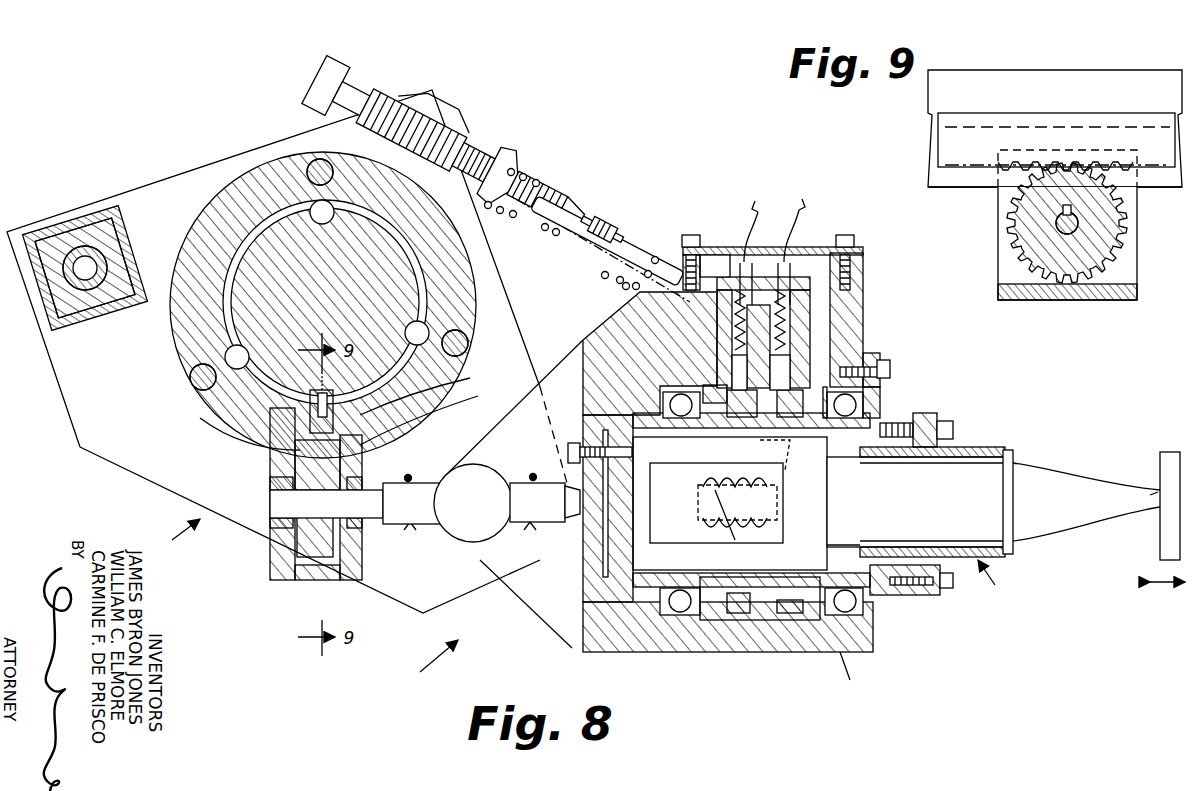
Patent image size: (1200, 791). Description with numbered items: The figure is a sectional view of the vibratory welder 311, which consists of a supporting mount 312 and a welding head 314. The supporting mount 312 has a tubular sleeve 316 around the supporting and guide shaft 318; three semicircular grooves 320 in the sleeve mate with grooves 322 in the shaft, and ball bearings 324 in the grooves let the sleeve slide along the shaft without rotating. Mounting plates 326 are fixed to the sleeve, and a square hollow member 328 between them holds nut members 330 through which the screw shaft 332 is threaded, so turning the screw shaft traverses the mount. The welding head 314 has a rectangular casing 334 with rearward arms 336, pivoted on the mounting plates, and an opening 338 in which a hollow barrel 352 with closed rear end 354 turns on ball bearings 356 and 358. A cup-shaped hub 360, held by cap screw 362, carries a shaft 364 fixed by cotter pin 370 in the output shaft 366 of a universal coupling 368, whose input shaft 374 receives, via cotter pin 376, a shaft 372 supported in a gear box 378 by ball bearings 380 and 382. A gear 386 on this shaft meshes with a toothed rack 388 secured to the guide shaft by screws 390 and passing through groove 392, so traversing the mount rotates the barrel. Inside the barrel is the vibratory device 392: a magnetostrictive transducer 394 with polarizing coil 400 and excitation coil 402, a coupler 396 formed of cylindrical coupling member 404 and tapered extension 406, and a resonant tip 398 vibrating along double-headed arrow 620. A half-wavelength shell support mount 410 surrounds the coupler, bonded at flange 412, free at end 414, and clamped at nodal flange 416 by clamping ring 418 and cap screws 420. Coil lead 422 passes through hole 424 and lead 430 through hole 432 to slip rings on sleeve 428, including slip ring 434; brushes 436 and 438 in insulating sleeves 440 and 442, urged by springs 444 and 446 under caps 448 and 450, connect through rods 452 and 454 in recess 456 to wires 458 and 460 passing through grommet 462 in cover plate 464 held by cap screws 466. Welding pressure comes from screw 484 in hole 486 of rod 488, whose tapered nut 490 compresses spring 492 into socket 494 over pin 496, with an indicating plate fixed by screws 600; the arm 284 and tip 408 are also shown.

In FIG. 8, the arcuate arm 284 is at (392, 408).
In FIG. 8, the vibratory welder 311 is at (433, 668).
In FIG. 8, the supporting mount 312 is at (140, 541).
In FIG. 8, the welding head 314 is at (828, 702).
In FIG. 8, the tubular sleeve 316 is at (248, 192).
In FIG. 9, the tubular sleeve 316 is at (945, 178).
In FIG. 8, the supporting and guide shaft 318 is at (268, 268).
In FIG. 9, the supporting and guide shaft 318 is at (1000, 82).
In FIG. 8, the grooves 320 is at (300, 170).
In FIG. 8, the grooves 322 is at (425, 225).
In FIG. 8, the ball bearings 324 is at (322, 212).
In FIG. 8, the mounting plates 326 is at (75, 397).
In FIG. 8, the hollow member 328 is at (125, 318).
In FIG. 8, the nut members 330 is at (78, 318).
In FIG. 8, the screw shaft 332 is at (80, 254).
In FIG. 8, the casing 334 is at (612, 640).
In FIG. 8, the arms 336 is at (530, 413).
In FIG. 8, the opening 338 is at (608, 405).
In FIG. 8, the barrel 352 is at (878, 412).
In FIG. 8, the closed rear end 354 is at (635, 538).
In FIG. 8, the ball bearing 356 is at (670, 618).
In FIG. 8, the ball bearing 358 is at (835, 618).
In FIG. 8, the hub 360 is at (630, 560).
In FIG. 8, the cap screw 362 is at (573, 445).
In FIG. 8, the shaft 364 is at (568, 515).
In FIG. 8, the output shaft 366 is at (520, 522).
In FIG. 8, the universal coupling 368 is at (478, 540).
In FIG. 8, the cotter pin 370 is at (533, 473).
In FIG. 8, the shaft 372 is at (372, 512).
In FIG. 9, the shaft 372 is at (1056, 223).
In FIG. 8, the input shaft 374 is at (428, 498).
In FIG. 8, the cotter pin 376 is at (412, 528).
In FIG. 8, the gear box 378 is at (280, 578).
In FIG. 9, the gear box 378 is at (1012, 270).
In FIG. 8, the ball bearing 380 is at (360, 480).
In FIG. 8, the ball bearing 382 is at (270, 482).
In FIG. 8, the gear 386 is at (320, 545).
In FIG. 9, the gear 386 is at (1080, 268).
In FIG. 8, the toothed rack 388 is at (335, 418).
In FIG. 9, the toothed rack 388 is at (950, 142).
In FIG. 8, the screws 390 is at (300, 385).
In FIG. 8, the vibratory device 392 is at (395, 426).
In FIG. 8, the magnetostrictive transducer 394 is at (658, 498).
In FIG. 8, the coupler 396 is at (1028, 470).
In FIG. 8, the resonant tip 398 is at (1170, 452).
In FIG. 8, the polarizing coil 400 is at (720, 484).
In FIG. 8, the excitation coil 402 is at (735, 530).
In FIG. 8, the cylindrical coupling member 404 is at (950, 540).
In FIG. 8, the extension 406 is at (1042, 527).
In FIG. 8, the horn tip 408 is at (1152, 513).
In FIG. 8, the support mount 410 is at (962, 447).
In FIG. 8, the flange 412 is at (1010, 450).
In FIG. 8, the end 414 is at (835, 548).
In FIG. 8, the flange 416 is at (905, 575).
In FIG. 8, the clamping ring 418 is at (922, 415).
In FIG. 8, the cap screws 420 is at (940, 418).
In FIG. 8, the other end of polarizing coil 422 is at (775, 453).
In FIG. 8, the hole 424 is at (700, 418).
In FIG. 8, the sleeve 428 is at (795, 404).
In FIG. 8, the other end of excitation coil 430 is at (785, 390).
In FIG. 8, the hole 432 is at (916, 502).
In FIG. 8, the slip ring 434 is at (858, 360).
In FIG. 8, the contact brush 436 is at (745, 367).
In FIG. 8, the contact brush 438 is at (805, 330).
In FIG. 8, the insulating sleeve 440 is at (722, 330).
In FIG. 8, the insulating sleeve 442 is at (790, 300).
In FIG. 8, the helical coil spring 444 is at (717, 325).
In FIG. 8, the helical coil spring 446 is at (745, 318).
In FIG. 8, the cap 448 is at (725, 280).
In FIG. 8, the cap 450 is at (812, 262).
In FIG. 8, the rod 452 is at (745, 262).
In FIG. 8, the rod 454 is at (784, 262).
In FIG. 8, the recess 456 is at (850, 285).
In FIG. 8, the insulated wire 458 is at (756, 205).
In FIG. 8, the insulated wire 460 is at (801, 205).
In FIG. 8, the insulated grommet 462 is at (752, 248).
In FIG. 8, the cover plate 464 is at (705, 250).
In FIG. 8, the cap screws 466 is at (685, 243).
In FIG. 8, the screw 484 is at (450, 158).
In FIG. 8, the hole 486 is at (390, 139).
In FIG. 8, the rod 488 is at (410, 102).
In FIG. 8, the nut 490 is at (488, 173).
In FIG. 8, the helical coil spring 492 is at (524, 177).
In FIG. 8, the socket 494 is at (637, 285).
In FIG. 8, the pin 496 is at (602, 240).
In FIG. 8, the screws 600 is at (433, 110).
In FIG. 8, the double-headed arrow 620 is at (1167, 585).